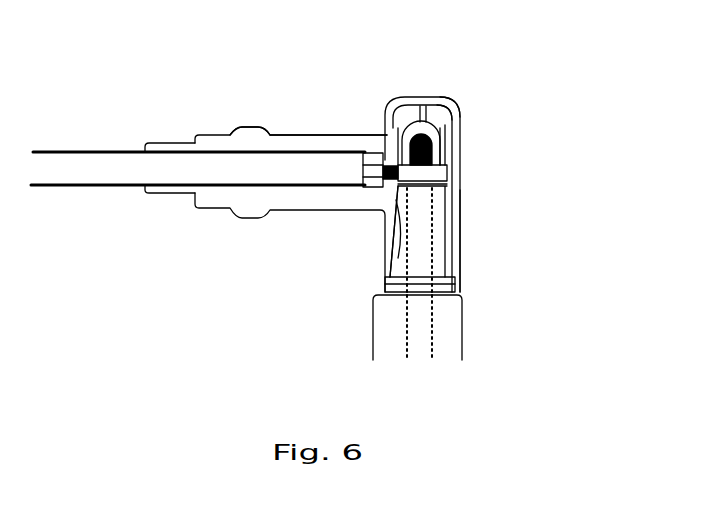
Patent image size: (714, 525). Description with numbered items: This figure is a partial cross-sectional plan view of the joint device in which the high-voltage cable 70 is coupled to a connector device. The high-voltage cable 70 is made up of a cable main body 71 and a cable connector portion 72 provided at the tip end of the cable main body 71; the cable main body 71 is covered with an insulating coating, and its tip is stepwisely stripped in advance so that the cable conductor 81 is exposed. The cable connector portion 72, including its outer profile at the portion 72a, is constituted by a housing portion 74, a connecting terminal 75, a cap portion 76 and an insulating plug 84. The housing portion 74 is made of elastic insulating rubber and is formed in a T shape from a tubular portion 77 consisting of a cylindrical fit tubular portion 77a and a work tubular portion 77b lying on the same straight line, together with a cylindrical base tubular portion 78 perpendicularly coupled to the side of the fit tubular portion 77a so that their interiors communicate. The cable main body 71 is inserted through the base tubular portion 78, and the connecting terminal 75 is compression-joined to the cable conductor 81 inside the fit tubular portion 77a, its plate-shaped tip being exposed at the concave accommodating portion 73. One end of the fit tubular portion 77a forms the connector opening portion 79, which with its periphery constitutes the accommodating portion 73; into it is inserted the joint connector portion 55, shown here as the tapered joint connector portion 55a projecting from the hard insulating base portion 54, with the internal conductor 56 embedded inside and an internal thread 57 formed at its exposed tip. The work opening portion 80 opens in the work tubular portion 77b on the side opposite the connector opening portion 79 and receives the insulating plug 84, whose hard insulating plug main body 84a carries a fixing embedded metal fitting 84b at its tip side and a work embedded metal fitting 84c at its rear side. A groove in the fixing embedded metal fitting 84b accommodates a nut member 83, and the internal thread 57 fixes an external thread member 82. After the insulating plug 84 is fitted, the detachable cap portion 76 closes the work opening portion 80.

The base portion 54 is at (457, 339).
The joint connector portion 55 is at (393, 274).
The joint connector portion 55a is at (335, 243).
The internal conductor 56 is at (405, 345).
The internal thread 57 is at (395, 236).
The high-voltage cable 70 is at (74, 151).
The cable main body 71 is at (101, 164).
The cable connector portion 72 is at (219, 134).
The boot bulge 72a is at (235, 90).
The concave accommodating portion 73 is at (393, 258).
The housing portion 74 is at (277, 134).
The connecting terminal 75 is at (382, 129).
The cap portion 76 is at (454, 103).
The housing 77 is at (422, 194).
The fit tubular portion 77a is at (463, 204).
The work tubular portion 77b is at (456, 98).
The base tubular portion 78 is at (173, 152).
The connector opening portion 79 is at (393, 299).
The work opening portion 80 is at (440, 99).
The cable conductor 81 is at (385, 139).
The external thread member 82 is at (422, 99).
The nut member 83 is at (386, 107).
The insulating plug 84 is at (400, 103).
The insulating plug main body 84a is at (458, 131).
The fixing embedded metal fitting 84b is at (458, 146).
The work embedded metal fitting 84c is at (428, 96).